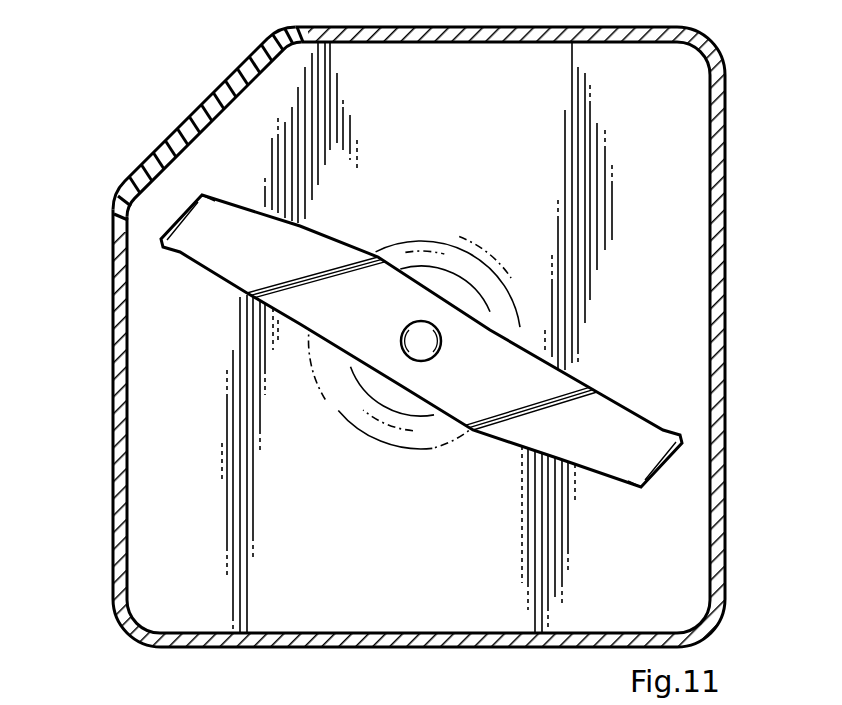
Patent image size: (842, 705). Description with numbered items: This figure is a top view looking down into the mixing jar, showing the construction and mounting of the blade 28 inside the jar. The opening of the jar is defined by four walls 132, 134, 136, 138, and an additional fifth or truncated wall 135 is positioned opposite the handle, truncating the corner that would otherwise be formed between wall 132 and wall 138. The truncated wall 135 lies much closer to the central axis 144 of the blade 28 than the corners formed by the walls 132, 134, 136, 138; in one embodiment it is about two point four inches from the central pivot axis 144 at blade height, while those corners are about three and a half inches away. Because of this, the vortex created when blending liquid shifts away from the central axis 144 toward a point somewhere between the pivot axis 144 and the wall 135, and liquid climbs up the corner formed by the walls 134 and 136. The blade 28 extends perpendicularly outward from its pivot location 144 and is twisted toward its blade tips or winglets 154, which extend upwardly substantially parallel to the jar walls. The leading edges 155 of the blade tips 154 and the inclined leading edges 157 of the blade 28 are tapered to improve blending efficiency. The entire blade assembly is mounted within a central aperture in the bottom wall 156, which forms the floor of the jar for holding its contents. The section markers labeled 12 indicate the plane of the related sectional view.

The blade 28 is at (603, 389).
The wall 132 is at (113, 442).
The wall 134 is at (446, 648).
The truncated wall 135 is at (212, 93).
The wall 136 is at (725, 270).
The wall 138 is at (312, 27).
The central axis 144 is at (436, 328).
The blade tips 154 is at (162, 244).
The leading edges 155 is at (193, 203).
The bottom wall 156 is at (348, 549).
The inclined leading edges 157 is at (224, 202).
The section line 12 is at (762, 372).